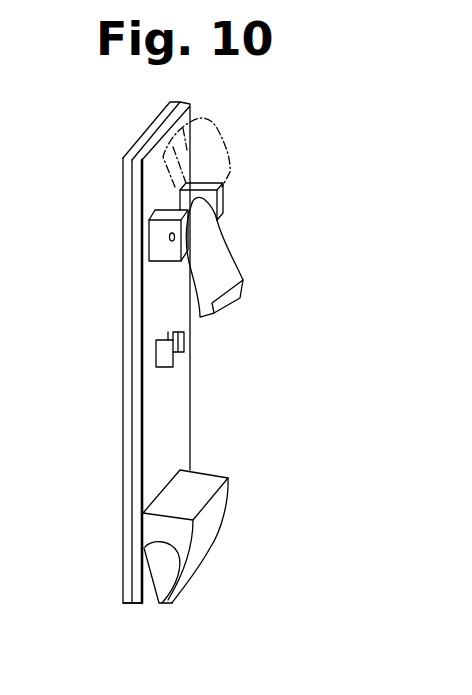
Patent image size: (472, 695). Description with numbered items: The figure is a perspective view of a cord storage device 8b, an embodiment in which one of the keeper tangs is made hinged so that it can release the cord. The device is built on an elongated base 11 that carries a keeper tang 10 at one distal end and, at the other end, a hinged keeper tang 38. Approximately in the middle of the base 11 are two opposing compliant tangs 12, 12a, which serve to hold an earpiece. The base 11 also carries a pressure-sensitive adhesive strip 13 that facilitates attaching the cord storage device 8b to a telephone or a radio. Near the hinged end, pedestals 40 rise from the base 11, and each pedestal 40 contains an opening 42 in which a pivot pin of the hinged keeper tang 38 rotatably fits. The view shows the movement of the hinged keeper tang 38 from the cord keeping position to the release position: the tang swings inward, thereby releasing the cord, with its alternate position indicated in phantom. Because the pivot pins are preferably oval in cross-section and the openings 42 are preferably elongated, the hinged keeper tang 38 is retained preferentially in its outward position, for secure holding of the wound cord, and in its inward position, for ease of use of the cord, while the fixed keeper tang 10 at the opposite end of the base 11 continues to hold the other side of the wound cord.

The cord storage device 8b is at (80, 485).
The keeper tang 10 is at (208, 525).
The elongated base 11 is at (170, 450).
The compliant tang 12 is at (175, 360).
The compliant tang 12a is at (177, 352).
The pressure-sensitive adhesive strip 13 is at (123, 578).
The hinged keeper tang 38 is at (238, 142).
The pedestal 40 is at (220, 200).
The opening 42 is at (167, 237).